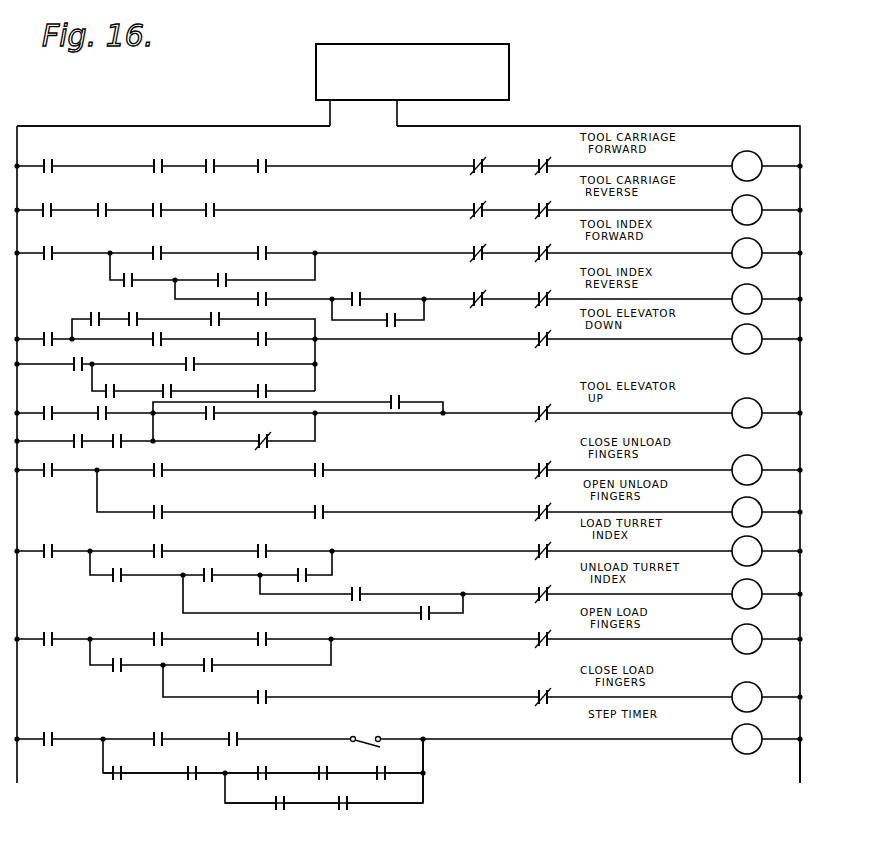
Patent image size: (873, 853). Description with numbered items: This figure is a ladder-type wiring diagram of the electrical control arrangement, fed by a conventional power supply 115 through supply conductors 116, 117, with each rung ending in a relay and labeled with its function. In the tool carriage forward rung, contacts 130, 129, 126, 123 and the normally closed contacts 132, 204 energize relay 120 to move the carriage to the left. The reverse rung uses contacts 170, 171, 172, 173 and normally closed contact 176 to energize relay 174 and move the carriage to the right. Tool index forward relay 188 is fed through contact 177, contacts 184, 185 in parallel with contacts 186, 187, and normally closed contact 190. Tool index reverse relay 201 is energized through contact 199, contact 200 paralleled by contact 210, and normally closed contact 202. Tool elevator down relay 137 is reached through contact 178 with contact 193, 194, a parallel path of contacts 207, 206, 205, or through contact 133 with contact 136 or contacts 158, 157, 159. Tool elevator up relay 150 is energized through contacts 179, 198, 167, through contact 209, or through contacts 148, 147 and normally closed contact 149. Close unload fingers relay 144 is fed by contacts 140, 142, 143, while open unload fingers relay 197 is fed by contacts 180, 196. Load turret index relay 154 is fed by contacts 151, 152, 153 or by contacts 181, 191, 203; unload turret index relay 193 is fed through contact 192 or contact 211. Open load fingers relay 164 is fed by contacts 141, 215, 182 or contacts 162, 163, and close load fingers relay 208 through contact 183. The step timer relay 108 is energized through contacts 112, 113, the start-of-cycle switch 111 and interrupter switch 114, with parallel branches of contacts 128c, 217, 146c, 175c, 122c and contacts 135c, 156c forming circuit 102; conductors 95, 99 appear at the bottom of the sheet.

The power supply 115 is at (510, 56).
The supply conductor 116 is at (152, 126).
The supply conductor 117 is at (656, 126).
The contact 130 is at (62, 150).
The contact 129 is at (165, 149).
The contact 126 is at (222, 150).
The contact 123 is at (275, 150).
The contact 132 is at (478, 159).
The contact of interlock relay 204 is at (542, 158).
The relay 120 is at (770, 152).
The contact 170 is at (46, 202).
The contact 171 is at (103, 202).
The contact 172 is at (156, 202).
The contact 173 is at (211, 202).
The contact 176 is at (478, 202).
The relay 174 is at (772, 196).
The contact 177 is at (45, 245).
The contact 184 is at (158, 246).
The contact 185 is at (264, 246).
The contact 190 is at (476, 244).
The relay 188 is at (772, 238).
The contact 186 is at (122, 280).
The contact 187 is at (218, 276).
The contact 199 is at (266, 298).
The contact 200 is at (352, 276).
The contact 202 is at (476, 294).
The contact 210 is at (397, 324).
The relay 201 is at (738, 296).
The contact 178 is at (48, 332).
The relay and contact 193 is at (157, 335).
The contact 194 is at (262, 334).
The contact 207 is at (92, 310).
The contact 206 is at (132, 310).
The contact 205 is at (214, 311).
The relay 137 is at (732, 344).
The contact 133 is at (81, 359).
The contact 136 is at (192, 359).
The contact 158 is at (111, 386).
The contact 157 is at (168, 386).
The contact 159 is at (262, 386).
The contact 179 is at (52, 400).
The contact 198 is at (102, 410).
The contact 167 is at (210, 418).
The contact 209 is at (396, 398).
The relay 150 is at (774, 392).
The contact 148 is at (64, 452).
The contact 147 is at (116, 452).
The normally closed contact 149 is at (268, 448).
The contact 140 is at (56, 478).
The contact 142 is at (162, 473).
The contact 143 is at (324, 461).
The relay 144 is at (774, 450).
The contact 180 is at (158, 506).
The contact 196 is at (318, 506).
The relay 197 is at (772, 494).
The contact 151 is at (58, 528).
The contact 152 is at (156, 544).
The contact 153 is at (262, 544).
The relay 154 is at (772, 536).
The contact 181 is at (112, 584).
The contact 191 is at (206, 582).
The contact 203 is at (308, 560).
The contact 192 is at (348, 580).
The contact 211 is at (428, 620).
The contact 141 is at (48, 630).
The contact 215 is at (160, 630).
The contact 182 is at (262, 630).
The relay 164 is at (772, 624).
The contact 162 is at (116, 672).
The contact 163 is at (206, 662).
The contact 183 is at (260, 688).
The relay 208 is at (770, 672).
The contact 112 is at (48, 730).
The contact 113 is at (158, 730).
The machine start-of-cycle switch 111 is at (238, 730).
The interrupter switch 114 is at (374, 722).
The stepping switch timer relay 108 is at (740, 758).
The contact 128c is at (116, 780).
The contact 217 is at (192, 780).
The contact 146c is at (262, 766).
The contact 175c is at (330, 760).
The contact 122c is at (380, 766).
The contact 135c is at (278, 808).
The contact 156c is at (344, 808).
The step timer circuit 102 is at (260, 813).
The conductor 95 is at (505, 846).
The conductor 99 is at (756, 796).